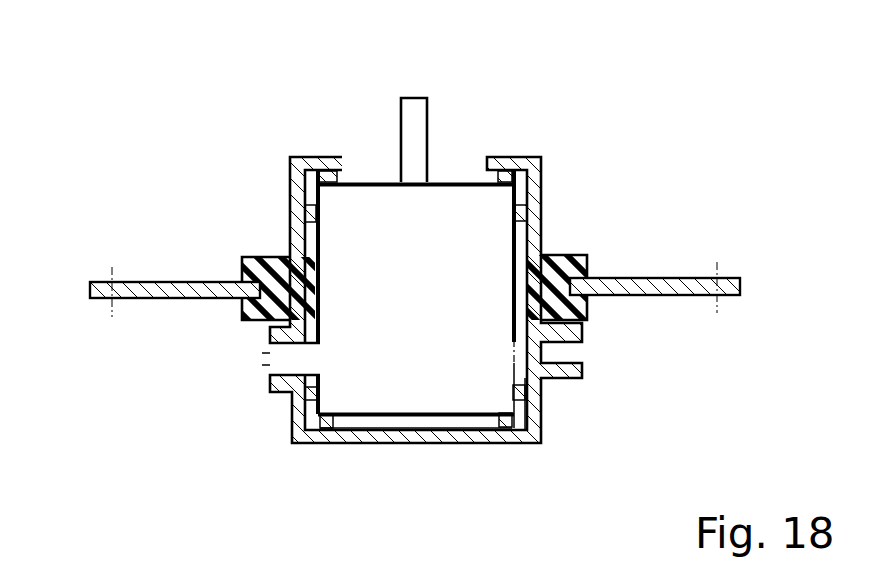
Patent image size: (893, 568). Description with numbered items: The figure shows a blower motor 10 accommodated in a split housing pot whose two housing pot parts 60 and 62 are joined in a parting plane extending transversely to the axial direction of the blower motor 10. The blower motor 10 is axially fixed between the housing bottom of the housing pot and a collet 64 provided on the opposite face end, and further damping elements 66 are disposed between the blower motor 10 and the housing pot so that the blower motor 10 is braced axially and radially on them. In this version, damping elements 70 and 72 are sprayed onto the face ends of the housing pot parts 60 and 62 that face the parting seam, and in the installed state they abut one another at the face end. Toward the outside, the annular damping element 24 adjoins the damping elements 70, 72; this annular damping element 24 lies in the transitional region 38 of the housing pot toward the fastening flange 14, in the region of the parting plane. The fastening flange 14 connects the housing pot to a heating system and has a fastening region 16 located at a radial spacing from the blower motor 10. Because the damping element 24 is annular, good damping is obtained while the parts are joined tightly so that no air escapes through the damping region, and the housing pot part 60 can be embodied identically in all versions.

The blower motor 10 is at (425, 390).
The fastening flange 14 is at (688, 285).
The fastening region 16 is at (112, 267).
The annular damping element 24 is at (585, 305).
The transitional region 38 is at (602, 228).
The housing pot part 60 is at (292, 248).
The housing pot part 62 is at (505, 426).
The collet 64 is at (326, 170).
The damping elements 66 is at (328, 422).
The damping element 70 is at (288, 262).
The damping element 72 is at (288, 320).